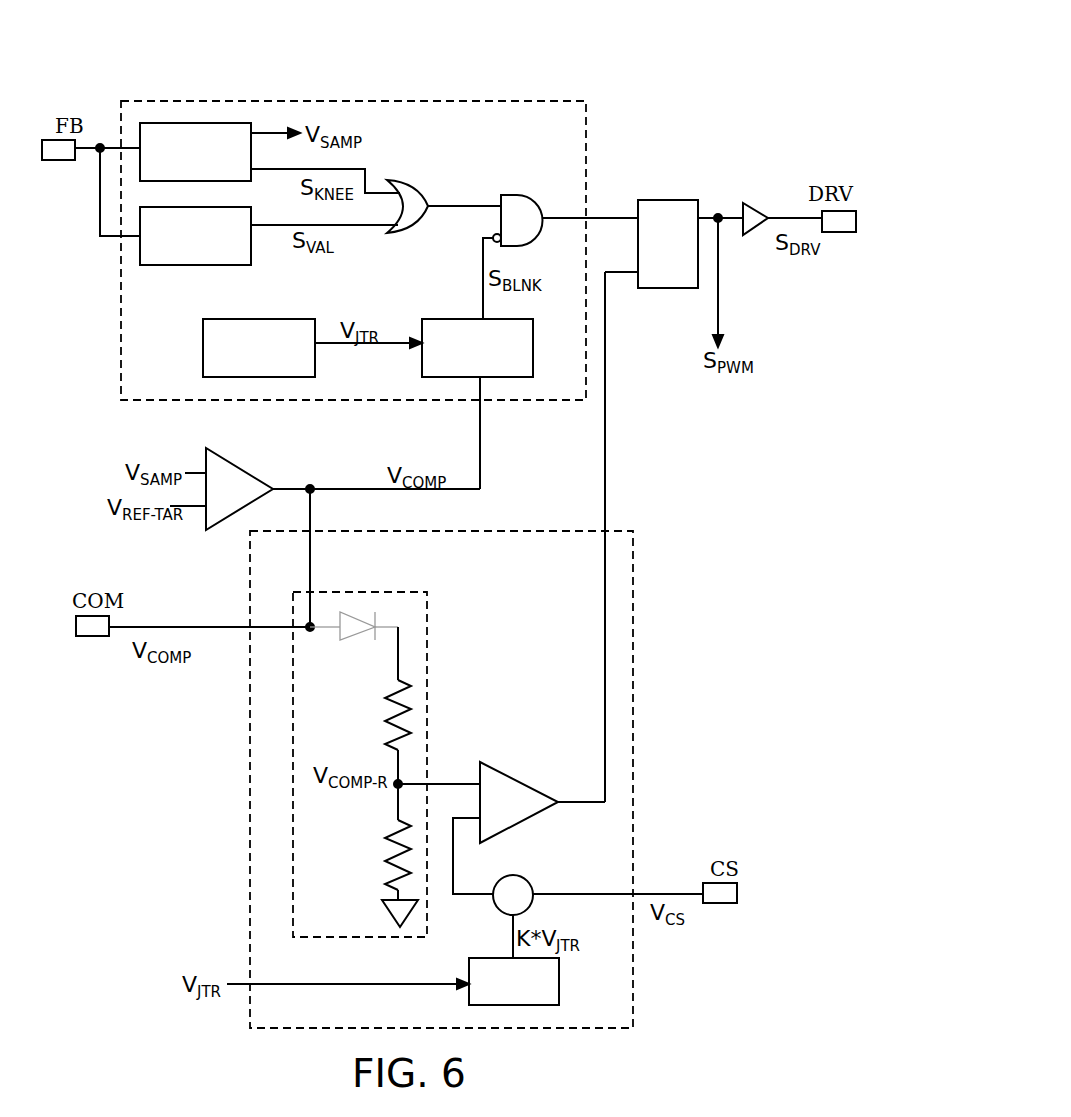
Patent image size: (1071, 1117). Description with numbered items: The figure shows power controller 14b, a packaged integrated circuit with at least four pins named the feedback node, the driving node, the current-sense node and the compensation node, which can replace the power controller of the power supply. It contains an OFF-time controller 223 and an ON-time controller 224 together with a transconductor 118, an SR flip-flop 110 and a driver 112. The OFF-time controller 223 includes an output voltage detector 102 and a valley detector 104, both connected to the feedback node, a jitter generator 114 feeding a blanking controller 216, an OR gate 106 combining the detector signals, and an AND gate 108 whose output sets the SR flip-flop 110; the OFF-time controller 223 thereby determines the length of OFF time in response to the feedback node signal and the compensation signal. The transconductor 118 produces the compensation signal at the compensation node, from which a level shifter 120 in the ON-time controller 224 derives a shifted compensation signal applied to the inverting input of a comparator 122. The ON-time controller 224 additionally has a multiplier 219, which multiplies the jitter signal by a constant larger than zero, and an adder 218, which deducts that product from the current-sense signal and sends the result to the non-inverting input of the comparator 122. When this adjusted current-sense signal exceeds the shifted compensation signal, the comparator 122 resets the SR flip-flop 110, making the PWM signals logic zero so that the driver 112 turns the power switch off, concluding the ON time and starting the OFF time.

The power controller 14b is at (520, 62).
The OFF-time controller 223 is at (262, 101).
The output voltage detector 102 is at (195, 152).
The valley detector 104 is at (195, 236).
The OR gate 106 is at (406, 180).
The AND gate 108 is at (517, 196).
The SR flip-flop 110 is at (674, 244).
The driver 112 is at (747, 203).
The jitter generator 114 is at (259, 348).
The blanking controller 216 is at (477, 348).
The transconductor 118 is at (223, 457).
The ON-time controller 224 is at (620, 531).
The level shifter 120 is at (410, 592).
The comparator 122 is at (498, 770).
The adder 218 is at (509, 876).
The multiplier 219 is at (559, 968).